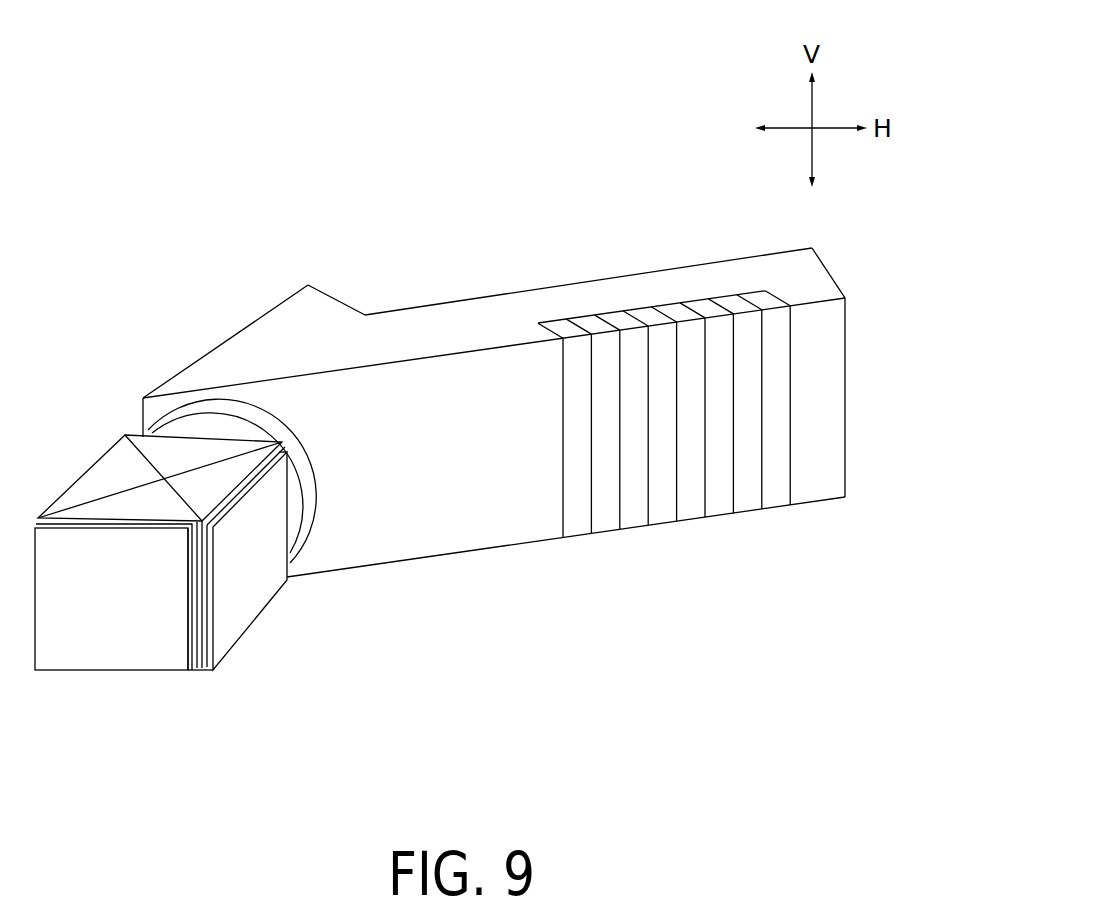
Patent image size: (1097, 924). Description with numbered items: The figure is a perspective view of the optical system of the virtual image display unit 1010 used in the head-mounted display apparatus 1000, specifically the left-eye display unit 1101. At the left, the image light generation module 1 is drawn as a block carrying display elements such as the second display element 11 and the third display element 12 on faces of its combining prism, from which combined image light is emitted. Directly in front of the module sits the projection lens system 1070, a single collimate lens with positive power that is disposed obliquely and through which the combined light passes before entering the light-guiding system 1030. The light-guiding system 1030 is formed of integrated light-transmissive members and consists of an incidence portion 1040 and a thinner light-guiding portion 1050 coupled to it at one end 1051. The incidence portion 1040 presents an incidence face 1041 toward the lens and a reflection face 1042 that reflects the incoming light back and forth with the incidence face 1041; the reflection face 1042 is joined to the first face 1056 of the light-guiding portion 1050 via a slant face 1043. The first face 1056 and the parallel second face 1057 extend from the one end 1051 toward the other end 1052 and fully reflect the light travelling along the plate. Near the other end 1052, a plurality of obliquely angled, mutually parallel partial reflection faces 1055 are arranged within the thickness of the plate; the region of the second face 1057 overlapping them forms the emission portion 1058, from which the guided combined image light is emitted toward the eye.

The image light generation module 1 is at (222, 695).
The second display element 11 is at (93, 598).
The third display element 12 is at (257, 608).
The head-mounted display apparatus 1000 is at (733, 73).
The virtual image display unit 1010 is at (516, 400).
The left-eye display unit 1101 is at (516, 400).
The light-guiding system 1030 is at (608, 270).
The incidence portion 1040 is at (309, 310).
The incidence face 1041 is at (278, 400).
The reflection face 1042 is at (241, 331).
The slant face 1043 is at (344, 308).
The light-guiding portion 1050 is at (470, 317).
The one end 1051 is at (368, 313).
The other end 1052 is at (830, 272).
The partial reflection faces 1055 is at (677, 450).
The first face 1056 is at (539, 285).
The second face 1057 is at (428, 535).
The emission portion 1058 is at (803, 537).
The projection lens system 1070 is at (195, 407).